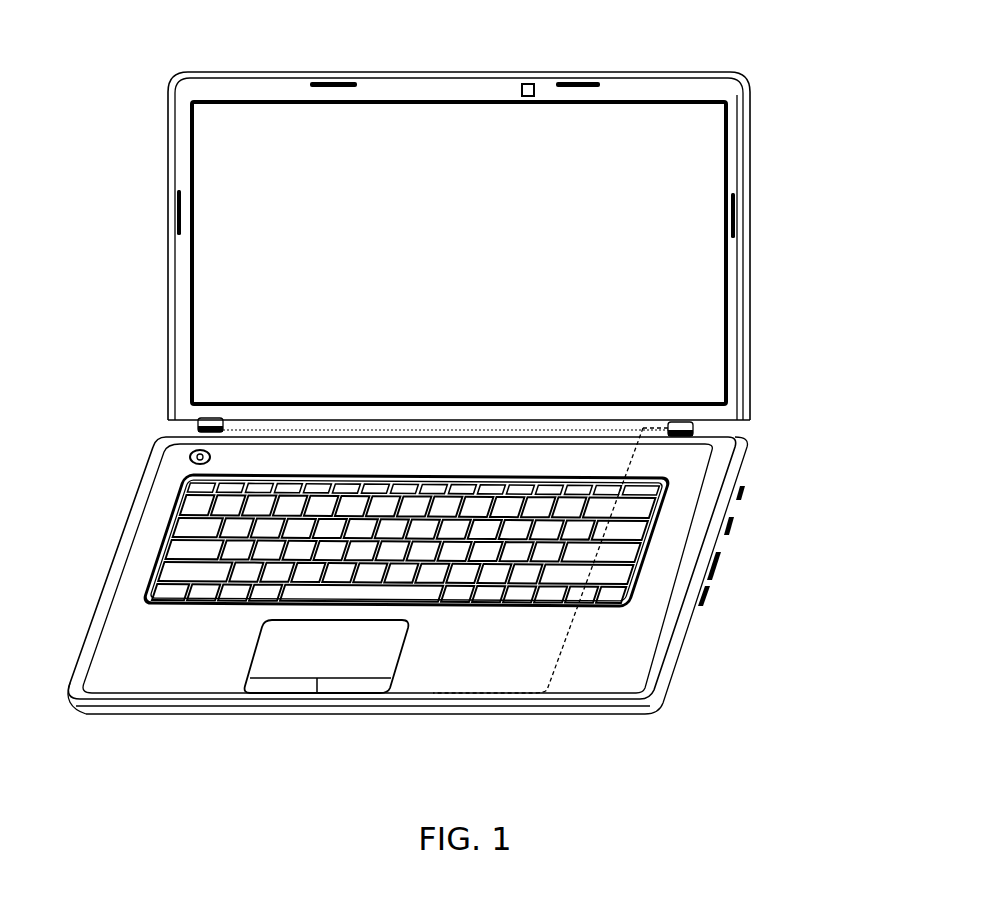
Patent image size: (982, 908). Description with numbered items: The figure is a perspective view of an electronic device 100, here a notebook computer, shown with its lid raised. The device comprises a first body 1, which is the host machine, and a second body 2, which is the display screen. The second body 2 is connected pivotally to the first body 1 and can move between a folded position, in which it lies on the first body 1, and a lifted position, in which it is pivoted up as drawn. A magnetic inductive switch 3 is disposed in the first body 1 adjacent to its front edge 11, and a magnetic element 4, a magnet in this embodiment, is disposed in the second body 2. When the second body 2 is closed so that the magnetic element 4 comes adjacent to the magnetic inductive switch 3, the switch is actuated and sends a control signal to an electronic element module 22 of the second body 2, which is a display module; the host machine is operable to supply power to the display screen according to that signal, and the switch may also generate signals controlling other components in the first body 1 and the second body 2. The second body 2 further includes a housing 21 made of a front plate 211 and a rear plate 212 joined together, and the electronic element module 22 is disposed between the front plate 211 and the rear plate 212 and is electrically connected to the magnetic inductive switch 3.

The electronic device 100 is at (764, 68).
The second body 2 is at (758, 165).
The housing 21 is at (755, 245).
The rear plate 212 is at (752, 302).
The front plate 211 is at (744, 358).
The electronic element module 22 is at (643, 140).
The magnetic element 4 is at (529, 80).
The first body 1 is at (697, 580).
The front edge 11 is at (497, 718).
The magnetic inductive switch 3 is at (432, 690).